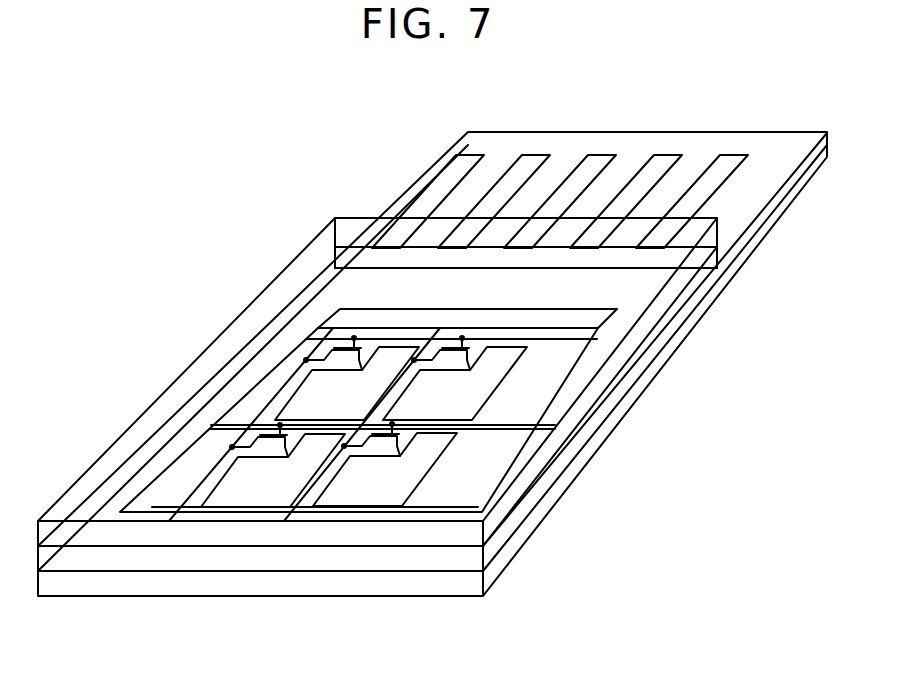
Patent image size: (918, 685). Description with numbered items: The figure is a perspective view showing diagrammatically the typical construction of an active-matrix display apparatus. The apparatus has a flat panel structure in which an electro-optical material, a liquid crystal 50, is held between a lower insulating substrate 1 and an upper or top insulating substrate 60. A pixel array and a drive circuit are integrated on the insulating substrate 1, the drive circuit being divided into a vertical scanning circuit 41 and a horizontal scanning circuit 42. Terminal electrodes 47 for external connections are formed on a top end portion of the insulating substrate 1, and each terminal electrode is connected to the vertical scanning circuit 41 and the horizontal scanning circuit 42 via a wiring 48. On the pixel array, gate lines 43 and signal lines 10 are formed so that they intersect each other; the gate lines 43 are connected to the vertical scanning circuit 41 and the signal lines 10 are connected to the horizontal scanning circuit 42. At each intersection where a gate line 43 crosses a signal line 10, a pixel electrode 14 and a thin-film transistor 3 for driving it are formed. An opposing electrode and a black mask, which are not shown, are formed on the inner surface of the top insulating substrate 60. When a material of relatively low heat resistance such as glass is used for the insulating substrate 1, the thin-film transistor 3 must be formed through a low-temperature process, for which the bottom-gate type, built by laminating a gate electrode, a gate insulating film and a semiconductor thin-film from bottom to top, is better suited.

The lower insulating substrate 1 is at (540, 505).
The signal lines 10 is at (413, 540).
The liquid crystal 50 is at (603, 402).
The wiring 48 is at (405, 303).
The top insulating substrate 60 is at (705, 217).
The terminal electrodes 47 is at (612, 152).
The vertical scanning circuit 41 is at (248, 388).
The horizontal scanning circuit 42 is at (597, 313).
The gate lines 43 is at (440, 503).
The thin-film transistor 3 is at (275, 492).
The pixel electrode 14 is at (262, 447).